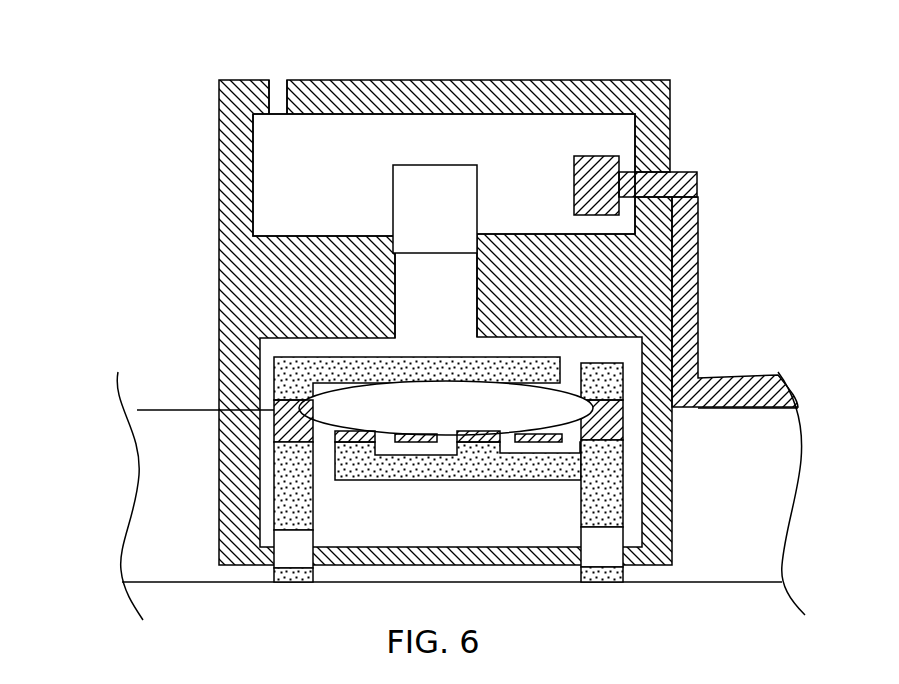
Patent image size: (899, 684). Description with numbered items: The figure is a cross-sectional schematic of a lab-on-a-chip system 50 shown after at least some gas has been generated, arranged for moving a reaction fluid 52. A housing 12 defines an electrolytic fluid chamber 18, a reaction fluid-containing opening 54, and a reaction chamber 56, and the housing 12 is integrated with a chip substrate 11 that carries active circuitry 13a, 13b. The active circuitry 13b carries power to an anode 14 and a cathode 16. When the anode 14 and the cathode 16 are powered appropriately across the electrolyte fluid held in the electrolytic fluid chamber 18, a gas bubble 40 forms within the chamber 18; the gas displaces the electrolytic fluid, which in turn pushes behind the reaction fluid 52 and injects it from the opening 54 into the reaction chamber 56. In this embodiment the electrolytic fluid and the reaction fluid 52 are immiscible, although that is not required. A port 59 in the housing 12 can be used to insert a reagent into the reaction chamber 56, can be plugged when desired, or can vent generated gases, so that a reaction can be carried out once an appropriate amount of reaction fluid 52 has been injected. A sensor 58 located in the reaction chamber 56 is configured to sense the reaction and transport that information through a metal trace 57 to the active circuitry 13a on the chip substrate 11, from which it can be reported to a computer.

The chip substrate 11 is at (753, 450).
The housing 12 is at (218, 162).
The active circuitry 13a is at (735, 408).
The active circuitry 13b is at (283, 513).
The anode 14 is at (735, 380).
The cathode 16 is at (222, 410).
The electrolytic fluid chamber 18 is at (545, 512).
The gas bubble 40 is at (395, 403).
The lab-on-a-chip system 50 is at (456, 329).
The reaction fluid 52 is at (420, 213).
The reaction fluid-containing opening 54 is at (437, 288).
The reaction chamber 56 is at (513, 148).
The metal trace 57 is at (697, 175).
The sensor 58 is at (587, 157).
The port 59 is at (287, 92).